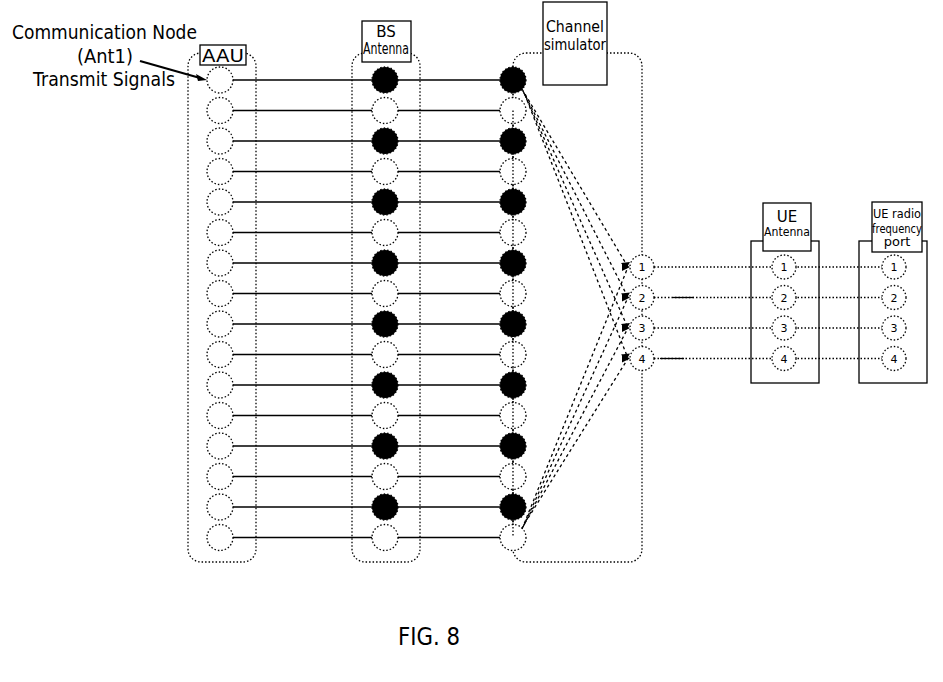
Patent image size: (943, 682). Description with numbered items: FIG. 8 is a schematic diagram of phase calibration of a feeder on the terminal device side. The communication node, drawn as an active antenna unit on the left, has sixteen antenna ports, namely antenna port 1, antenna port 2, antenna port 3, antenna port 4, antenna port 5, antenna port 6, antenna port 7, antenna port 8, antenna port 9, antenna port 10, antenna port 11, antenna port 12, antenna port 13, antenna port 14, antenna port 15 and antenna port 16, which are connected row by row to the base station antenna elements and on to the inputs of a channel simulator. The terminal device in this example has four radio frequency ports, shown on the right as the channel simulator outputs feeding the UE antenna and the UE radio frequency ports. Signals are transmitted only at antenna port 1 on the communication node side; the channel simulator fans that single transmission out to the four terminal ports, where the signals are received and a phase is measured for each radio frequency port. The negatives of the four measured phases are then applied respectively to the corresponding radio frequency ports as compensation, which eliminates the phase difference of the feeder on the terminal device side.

The antenna port ANT1 1 is at (220, 80).
The antenna port ANT2 2 is at (220, 111).
The antenna port ANT3 3 is at (220, 141).
The antenna port ANT4 4 is at (220, 172).
The antenna port ANT5 5 is at (220, 202).
The antenna port ANT6 6 is at (220, 233).
The antenna port ANT7 7 is at (220, 263).
The antenna port ANT8 8 is at (220, 294).
The antenna port ANT9 9 is at (220, 324).
The antenna port ANT10 10 is at (220, 355).
The antenna port ANT11 11 is at (220, 385).
The antenna port ANT12 12 is at (220, 416).
The antenna port ANT13 13 is at (220, 446).
The antenna port ANT14 14 is at (220, 477).
The antenna port ANT15 15 is at (220, 507).
The antenna port ANT16 16 is at (220, 538).